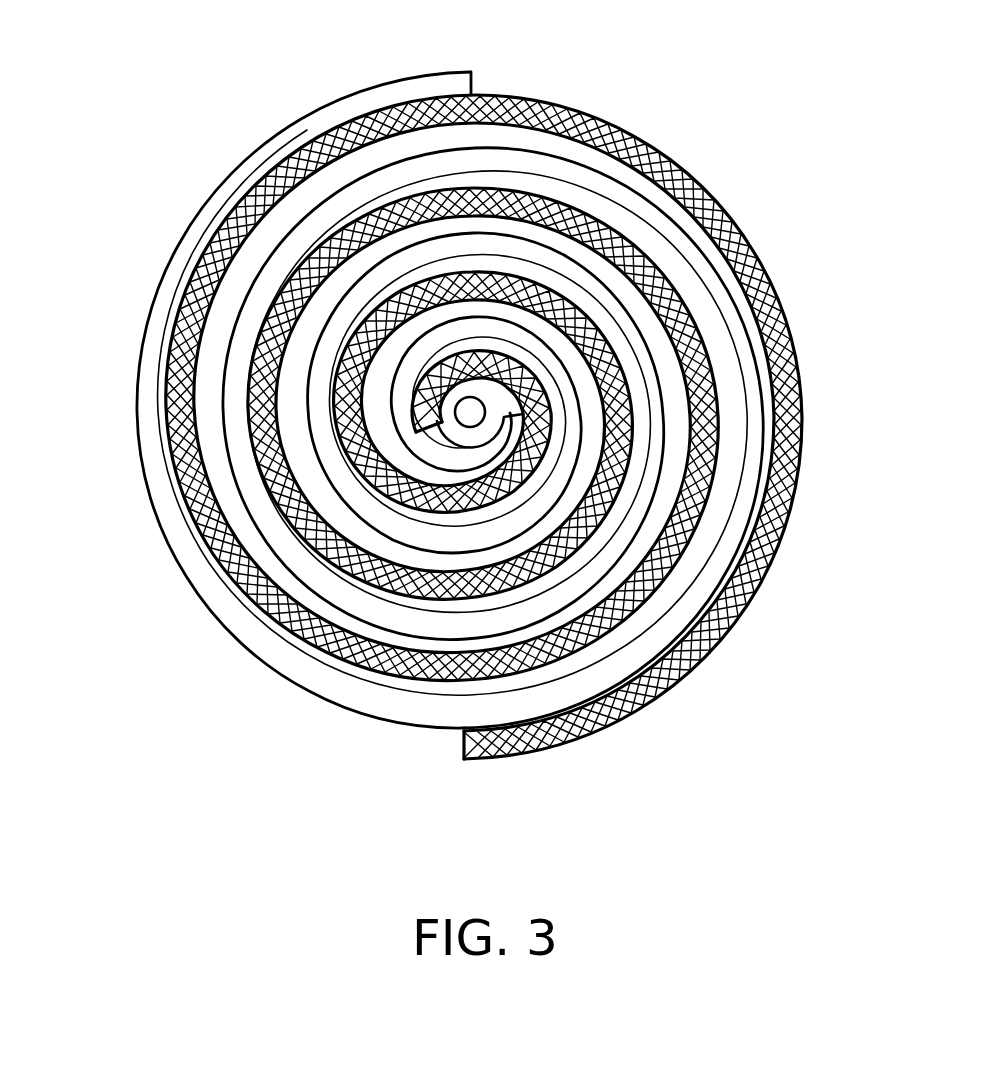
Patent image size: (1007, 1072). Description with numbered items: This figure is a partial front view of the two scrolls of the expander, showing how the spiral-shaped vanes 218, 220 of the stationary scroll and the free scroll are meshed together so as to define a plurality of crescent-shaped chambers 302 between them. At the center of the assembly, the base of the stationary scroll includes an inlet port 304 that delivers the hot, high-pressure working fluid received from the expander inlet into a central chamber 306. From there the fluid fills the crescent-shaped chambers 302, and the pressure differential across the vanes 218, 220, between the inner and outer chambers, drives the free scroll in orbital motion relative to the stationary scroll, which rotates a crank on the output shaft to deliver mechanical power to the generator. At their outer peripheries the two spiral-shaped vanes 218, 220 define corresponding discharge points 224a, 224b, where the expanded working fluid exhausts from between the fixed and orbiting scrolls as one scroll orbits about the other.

The spiral-shaped vane 218 is at (803, 500).
The spiral-shaped vane 220 is at (178, 573).
The crescent-shaped chamber 302 is at (267, 225).
The inlet port 304 is at (476, 403).
The central chamber 306 is at (467, 437).
The discharge point 224a is at (465, 730).
The discharge point 224b is at (475, 94).